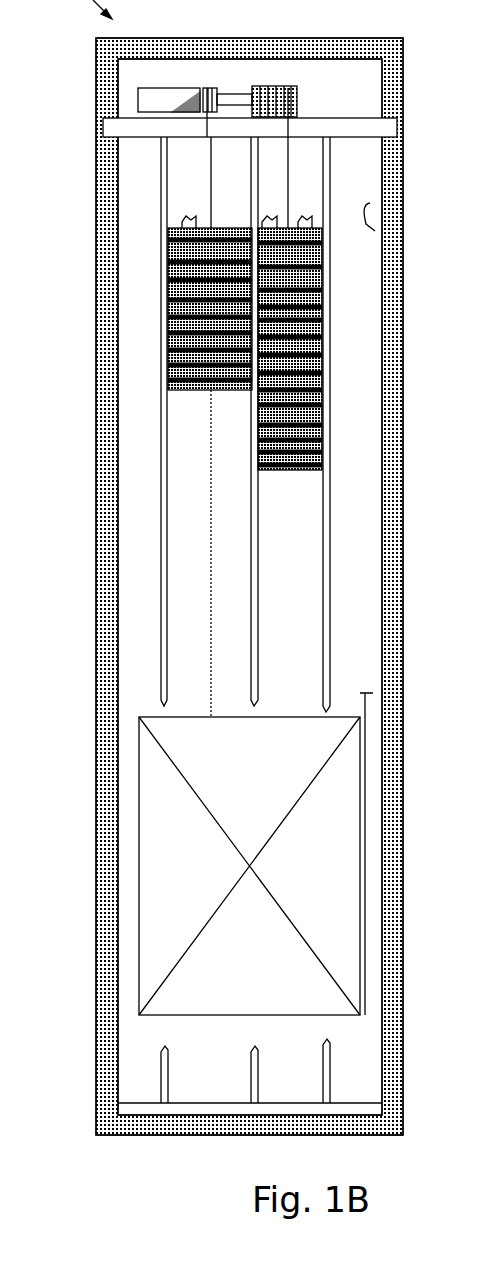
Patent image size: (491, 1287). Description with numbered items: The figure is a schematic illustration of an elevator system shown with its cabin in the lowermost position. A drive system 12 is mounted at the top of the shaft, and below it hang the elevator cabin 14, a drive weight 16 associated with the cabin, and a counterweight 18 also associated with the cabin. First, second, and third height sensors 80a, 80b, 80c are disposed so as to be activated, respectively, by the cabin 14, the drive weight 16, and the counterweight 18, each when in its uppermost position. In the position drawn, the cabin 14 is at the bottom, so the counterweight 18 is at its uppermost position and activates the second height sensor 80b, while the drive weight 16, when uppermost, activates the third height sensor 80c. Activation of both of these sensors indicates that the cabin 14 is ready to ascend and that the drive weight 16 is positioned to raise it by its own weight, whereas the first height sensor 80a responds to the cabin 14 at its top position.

The drive system 12 is at (330, 96).
The elevator cabin 14 is at (320, 838).
The drive weight 16 is at (302, 360).
The counterweight 18 is at (173, 352).
The first height sensor 80a is at (370, 203).
The second height sensor 80b is at (190, 222).
The third height sensor 80c is at (267, 213).